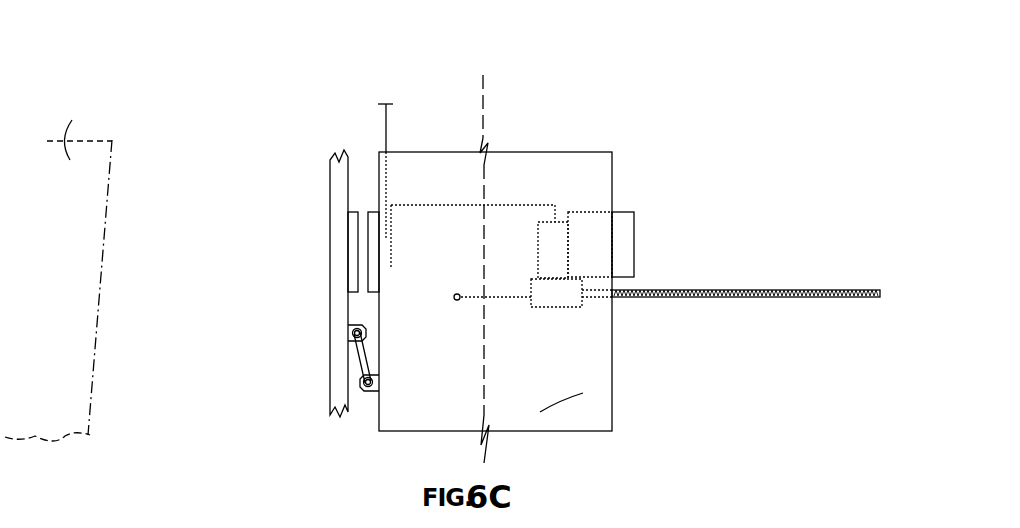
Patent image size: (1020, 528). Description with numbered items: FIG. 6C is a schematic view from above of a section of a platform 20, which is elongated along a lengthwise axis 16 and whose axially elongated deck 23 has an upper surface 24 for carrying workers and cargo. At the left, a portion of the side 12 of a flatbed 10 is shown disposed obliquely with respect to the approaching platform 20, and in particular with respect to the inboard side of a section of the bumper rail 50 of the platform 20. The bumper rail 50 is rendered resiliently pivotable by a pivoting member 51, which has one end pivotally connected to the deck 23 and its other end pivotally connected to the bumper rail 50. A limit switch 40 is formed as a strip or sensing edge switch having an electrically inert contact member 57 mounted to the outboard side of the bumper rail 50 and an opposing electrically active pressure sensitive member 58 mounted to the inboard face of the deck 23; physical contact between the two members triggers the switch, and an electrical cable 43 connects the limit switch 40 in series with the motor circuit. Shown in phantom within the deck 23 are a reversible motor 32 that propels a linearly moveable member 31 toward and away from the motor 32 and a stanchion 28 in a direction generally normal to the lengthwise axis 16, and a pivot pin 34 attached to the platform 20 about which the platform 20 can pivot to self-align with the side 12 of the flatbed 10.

The flatbed 10 is at (79, 126).
The side of the flatbed 12 is at (112, 152).
The lengthwise axis 16 is at (486, 86).
The platform 20 is at (555, 108).
The deck 23 is at (590, 166).
The upper surface 24 is at (561, 396).
The stanchion 28 is at (628, 222).
The linearly moveable member 31 is at (742, 290).
The reversible motor 32 is at (546, 263).
The pivot pin 34 is at (456, 305).
The limit switch 40 is at (362, 152).
The electrical cable 43 is at (437, 205).
The bumper rail 50 is at (333, 410).
The pivoting member 51 is at (370, 360).
The contact member 57 is at (353, 283).
The pressure sensitive member 58 is at (378, 283).